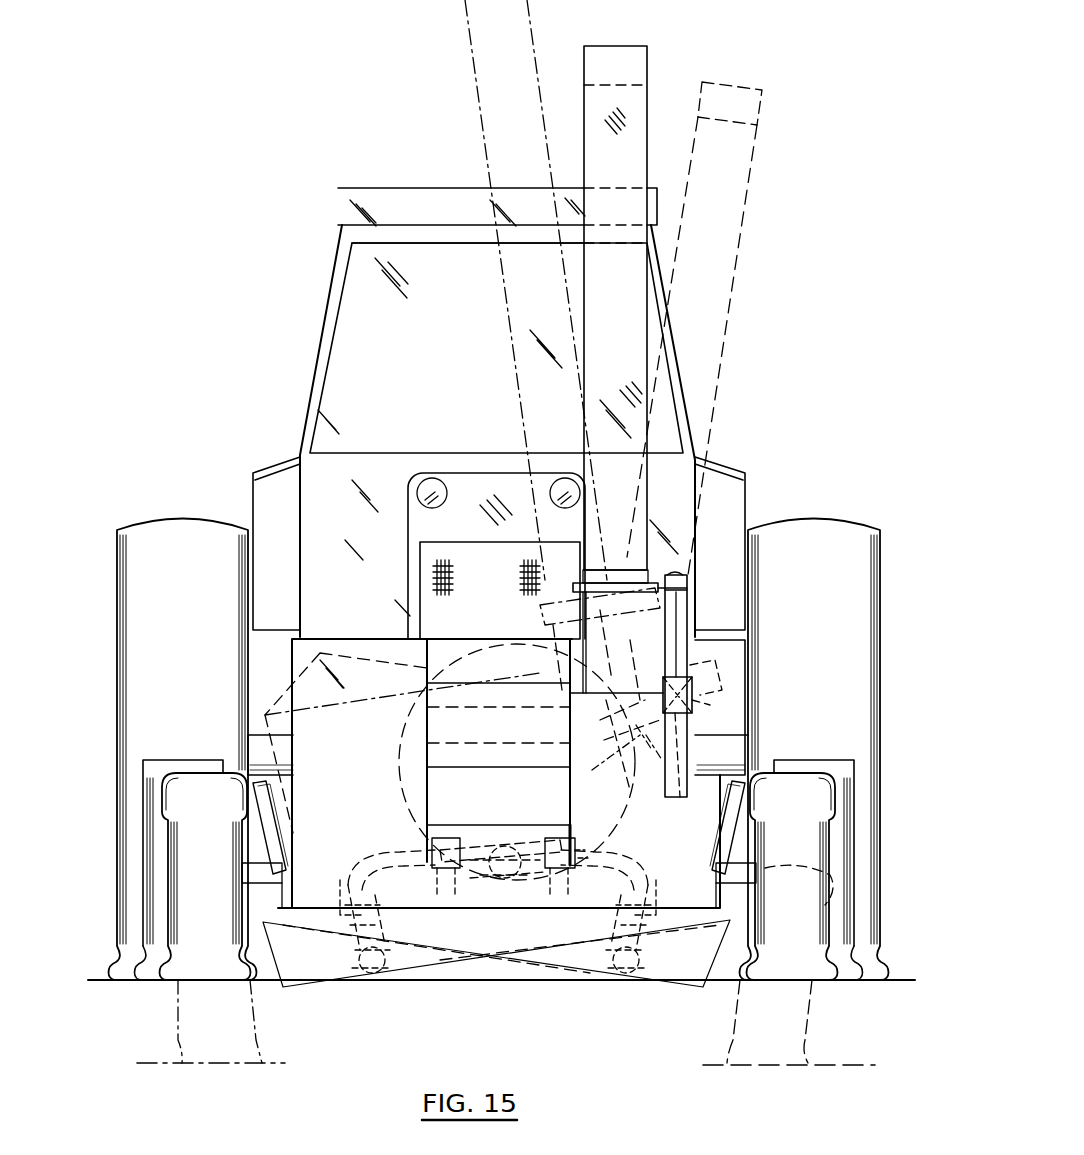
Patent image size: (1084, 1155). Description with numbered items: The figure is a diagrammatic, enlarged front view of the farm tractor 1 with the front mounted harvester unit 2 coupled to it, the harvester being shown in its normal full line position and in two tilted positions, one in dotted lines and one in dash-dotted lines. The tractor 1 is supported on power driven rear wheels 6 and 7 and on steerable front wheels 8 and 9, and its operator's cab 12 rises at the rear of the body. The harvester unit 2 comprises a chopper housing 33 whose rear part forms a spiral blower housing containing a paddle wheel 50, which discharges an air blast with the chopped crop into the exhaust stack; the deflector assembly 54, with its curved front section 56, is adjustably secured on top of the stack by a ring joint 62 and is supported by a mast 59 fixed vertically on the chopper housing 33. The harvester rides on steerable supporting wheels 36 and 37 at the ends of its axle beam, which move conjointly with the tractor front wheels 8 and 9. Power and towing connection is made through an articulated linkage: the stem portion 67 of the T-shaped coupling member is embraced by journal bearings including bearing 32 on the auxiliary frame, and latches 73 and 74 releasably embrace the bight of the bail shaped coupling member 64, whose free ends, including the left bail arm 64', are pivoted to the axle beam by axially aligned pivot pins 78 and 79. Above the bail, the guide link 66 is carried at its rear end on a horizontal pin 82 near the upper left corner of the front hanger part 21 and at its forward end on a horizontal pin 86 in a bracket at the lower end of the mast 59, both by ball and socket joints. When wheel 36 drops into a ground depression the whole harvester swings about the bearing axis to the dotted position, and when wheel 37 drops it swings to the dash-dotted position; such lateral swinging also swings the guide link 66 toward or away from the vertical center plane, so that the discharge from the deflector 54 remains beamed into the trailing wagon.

The farm tractor 1 is at (318, 330).
The front mounted harvester unit 2 is at (286, 680).
The rear wheel 6 is at (835, 522).
The rear wheel 7 is at (185, 522).
The front wheel 8 is at (810, 760).
The front wheel 9 is at (166, 760).
The operator's cab 12 is at (410, 200).
The upper part of front hanger bracket 21 is at (575, 840).
The journal bearing 32 is at (505, 898).
The chopper housing 33 is at (362, 639).
The supporting wheel 36 is at (815, 840).
The supporting wheel 37 is at (170, 837).
The paddle wheel 50 is at (400, 742).
The deflector assembly 54 is at (648, 152).
The curved front section 56 is at (648, 66).
The mast 59 is at (688, 580).
The ring joint 62 is at (578, 583).
The bail shaped coupling member 64 is at (391, 883).
The left bail arm 64' is at (614, 891).
The guide link 66 is at (700, 714).
The stem portion 67 is at (505, 845).
The latch 73 is at (548, 838).
The latch 74 is at (450, 838).
The pivot pin 78 is at (646, 893).
The pivot pin 79 is at (348, 893).
The horizontal pin 82 is at (627, 748).
The horizontal pin 86 is at (704, 692).